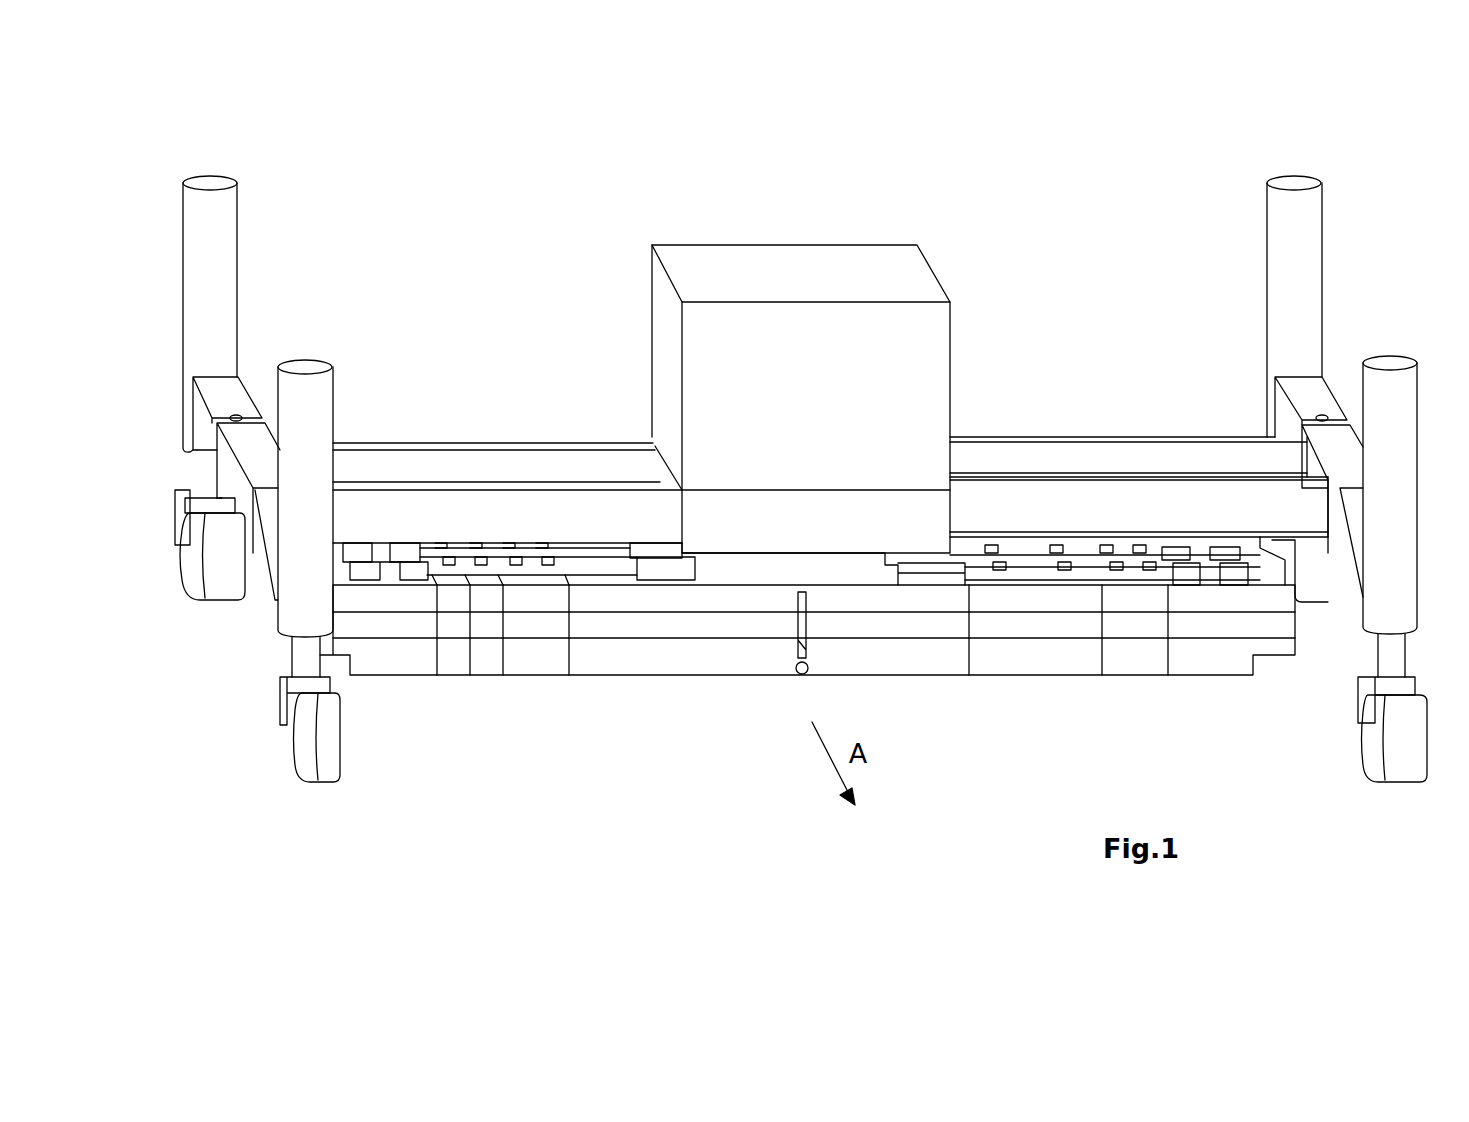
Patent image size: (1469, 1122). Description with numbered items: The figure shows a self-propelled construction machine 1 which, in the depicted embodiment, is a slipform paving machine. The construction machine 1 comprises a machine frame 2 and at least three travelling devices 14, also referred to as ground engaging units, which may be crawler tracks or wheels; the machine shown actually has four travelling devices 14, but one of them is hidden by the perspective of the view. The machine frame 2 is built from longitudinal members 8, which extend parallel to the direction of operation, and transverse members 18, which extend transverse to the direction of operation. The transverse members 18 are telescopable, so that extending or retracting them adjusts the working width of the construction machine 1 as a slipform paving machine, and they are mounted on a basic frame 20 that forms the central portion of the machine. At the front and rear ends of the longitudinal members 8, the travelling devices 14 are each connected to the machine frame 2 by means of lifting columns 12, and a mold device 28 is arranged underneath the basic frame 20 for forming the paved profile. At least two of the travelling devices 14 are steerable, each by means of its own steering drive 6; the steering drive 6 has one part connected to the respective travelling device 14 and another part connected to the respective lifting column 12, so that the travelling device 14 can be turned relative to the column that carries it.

The self-propelled construction machine 1 is at (960, 258).
The machine frame 2 is at (468, 388).
The steering drive 6 is at (1410, 654).
The longitudinal member 8 is at (205, 428).
The lifting column 12 is at (220, 228).
The travelling device 14 is at (193, 567).
The transverse member 18 is at (585, 510).
The basic frame 20 is at (801, 399).
The mold device 28 is at (592, 770).